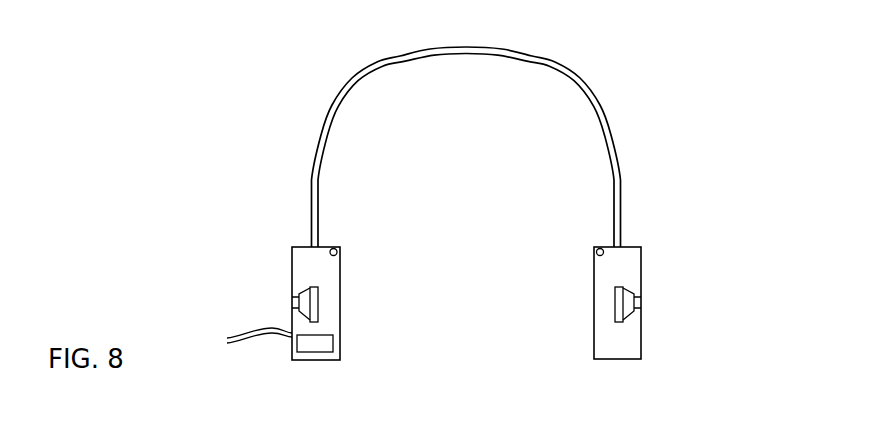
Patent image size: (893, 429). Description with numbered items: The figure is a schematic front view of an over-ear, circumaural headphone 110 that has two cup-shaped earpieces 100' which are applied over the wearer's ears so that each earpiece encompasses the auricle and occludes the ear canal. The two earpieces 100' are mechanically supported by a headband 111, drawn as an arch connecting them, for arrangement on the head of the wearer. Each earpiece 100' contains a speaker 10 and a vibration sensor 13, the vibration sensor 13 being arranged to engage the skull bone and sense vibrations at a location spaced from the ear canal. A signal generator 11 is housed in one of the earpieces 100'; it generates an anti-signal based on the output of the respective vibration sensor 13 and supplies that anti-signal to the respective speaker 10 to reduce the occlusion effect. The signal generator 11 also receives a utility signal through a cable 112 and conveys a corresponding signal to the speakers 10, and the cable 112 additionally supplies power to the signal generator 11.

The over-ear headphone 110 is at (487, 201).
The headband 111 is at (614, 160).
The earpiece 100' is at (479, 277).
The vibration sensor 13 is at (340, 248).
The speaker 10 is at (303, 290).
The signal generator 11 is at (338, 338).
The cable 112 is at (248, 333).